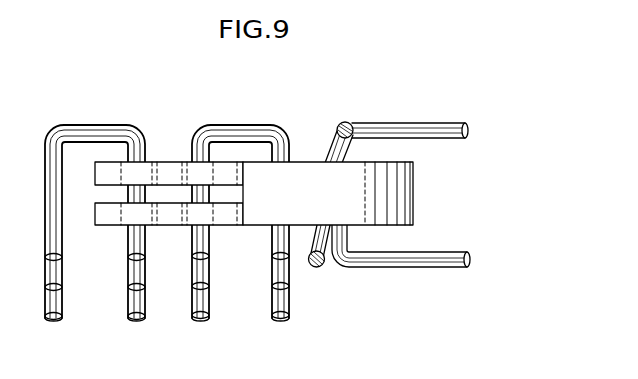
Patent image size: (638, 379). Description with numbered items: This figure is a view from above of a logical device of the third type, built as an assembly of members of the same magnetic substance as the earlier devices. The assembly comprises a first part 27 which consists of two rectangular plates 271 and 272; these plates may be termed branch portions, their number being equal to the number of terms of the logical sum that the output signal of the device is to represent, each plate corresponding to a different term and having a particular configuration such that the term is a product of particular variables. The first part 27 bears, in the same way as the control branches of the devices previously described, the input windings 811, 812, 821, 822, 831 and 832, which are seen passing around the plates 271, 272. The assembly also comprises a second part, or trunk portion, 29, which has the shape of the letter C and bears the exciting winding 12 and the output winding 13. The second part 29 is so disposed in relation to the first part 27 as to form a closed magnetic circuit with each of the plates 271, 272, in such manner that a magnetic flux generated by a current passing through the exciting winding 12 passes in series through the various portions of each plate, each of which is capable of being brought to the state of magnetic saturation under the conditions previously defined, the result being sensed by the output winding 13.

The first part 27 is at (160, 108).
The rectangular plate 271 is at (168, 225).
The rectangular plate 272 is at (168, 162).
The input winding 811 is at (127, 257).
The input winding 821 is at (127, 287).
The input winding 831 is at (127, 316).
The input winding 812 is at (272, 256).
The input winding 822 is at (272, 286).
The input winding 832 is at (272, 315).
The exciting winding 12 is at (345, 123).
The output winding 13 is at (442, 128).
The second part 29 is at (379, 116).